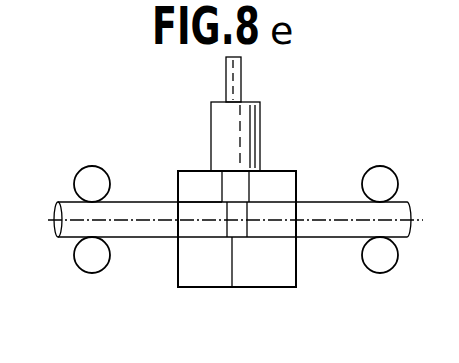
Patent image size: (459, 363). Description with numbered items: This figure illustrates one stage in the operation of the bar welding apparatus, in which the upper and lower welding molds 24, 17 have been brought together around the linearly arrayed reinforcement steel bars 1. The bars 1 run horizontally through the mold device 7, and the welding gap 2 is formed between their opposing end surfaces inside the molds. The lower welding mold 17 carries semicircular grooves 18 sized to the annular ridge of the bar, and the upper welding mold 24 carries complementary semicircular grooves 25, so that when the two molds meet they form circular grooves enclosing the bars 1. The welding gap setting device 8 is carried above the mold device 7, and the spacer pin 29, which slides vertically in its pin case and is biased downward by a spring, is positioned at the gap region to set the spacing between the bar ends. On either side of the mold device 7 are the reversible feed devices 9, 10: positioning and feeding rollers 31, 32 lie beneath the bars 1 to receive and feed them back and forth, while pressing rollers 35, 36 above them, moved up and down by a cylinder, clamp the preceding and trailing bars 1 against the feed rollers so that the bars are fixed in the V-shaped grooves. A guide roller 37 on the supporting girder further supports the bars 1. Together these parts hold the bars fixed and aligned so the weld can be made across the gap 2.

The reinforcement steel bar 1 is at (137, 237).
The welding gap 2 is at (227, 227).
The mold device 7 is at (200, 289).
The welding gap setting device 8 is at (263, 118).
The reversible feed device 9 is at (384, 196).
The reversible feed device 10 is at (102, 200).
The lower welding mold 17 is at (260, 273).
The semicircular grooves 18 is at (280, 231).
The upper welding mold 24 is at (199, 181).
The semicircular grooves 25 is at (192, 205).
The spacer pin 29 is at (240, 212).
The positioning and feeding roller 31 is at (380, 265).
The positioning and feeding roller 32 is at (92, 265).
The pressing roller 35 is at (376, 173).
The pressing roller 36 is at (89, 177).
The guide roller 37 is at (248, 185).